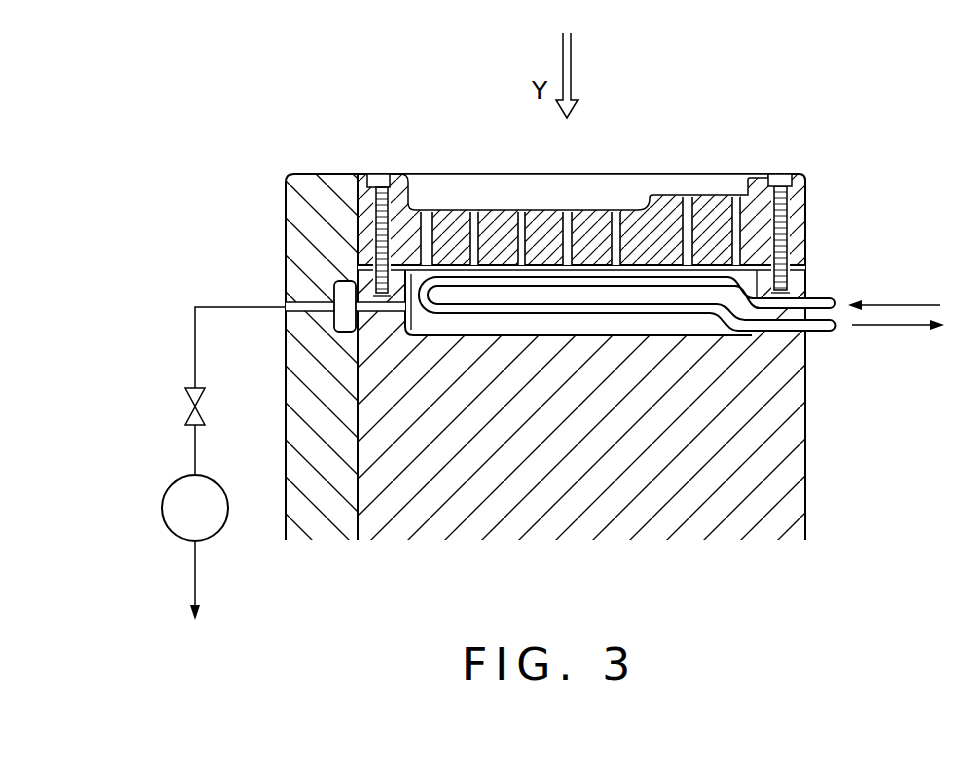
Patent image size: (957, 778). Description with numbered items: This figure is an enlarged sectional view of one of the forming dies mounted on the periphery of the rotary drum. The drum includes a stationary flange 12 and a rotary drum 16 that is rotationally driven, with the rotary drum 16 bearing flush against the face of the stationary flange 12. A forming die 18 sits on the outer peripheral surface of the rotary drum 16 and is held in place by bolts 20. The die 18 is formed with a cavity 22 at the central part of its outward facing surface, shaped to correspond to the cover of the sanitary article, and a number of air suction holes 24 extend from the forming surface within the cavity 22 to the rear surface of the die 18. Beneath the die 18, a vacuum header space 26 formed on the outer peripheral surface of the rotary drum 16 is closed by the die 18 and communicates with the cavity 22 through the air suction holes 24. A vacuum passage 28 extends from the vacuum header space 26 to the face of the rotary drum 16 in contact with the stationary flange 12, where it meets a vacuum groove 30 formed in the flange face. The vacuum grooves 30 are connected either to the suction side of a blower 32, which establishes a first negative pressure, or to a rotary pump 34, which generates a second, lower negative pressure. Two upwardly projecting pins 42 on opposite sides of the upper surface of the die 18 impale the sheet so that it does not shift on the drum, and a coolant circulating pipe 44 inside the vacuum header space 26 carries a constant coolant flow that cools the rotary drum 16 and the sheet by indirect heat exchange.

The stationary flange 12 is at (293, 242).
The rotary drum 16 is at (797, 404).
The forming die 18 is at (676, 175).
The bolt 20 is at (770, 173).
The cavity 22 is at (460, 198).
The air suction hole 24 is at (617, 217).
The vacuum header space 26 is at (683, 323).
The vacuum passage 28 is at (393, 312).
The vacuum groove 30 is at (333, 290).
The blower 32 is at (184, 463).
The rotary pump 34 is at (195, 406).
The pin 42 is at (377, 172).
The coolant circulating pipe 44 is at (545, 320).